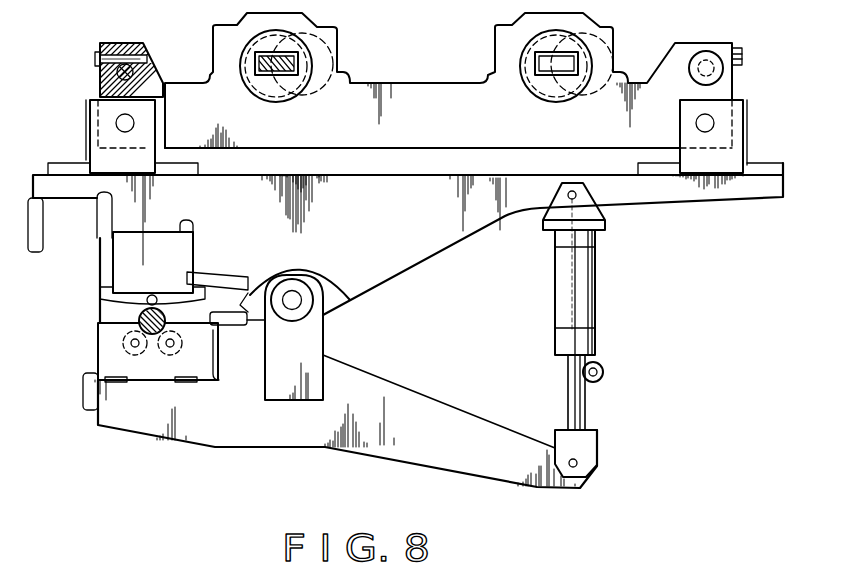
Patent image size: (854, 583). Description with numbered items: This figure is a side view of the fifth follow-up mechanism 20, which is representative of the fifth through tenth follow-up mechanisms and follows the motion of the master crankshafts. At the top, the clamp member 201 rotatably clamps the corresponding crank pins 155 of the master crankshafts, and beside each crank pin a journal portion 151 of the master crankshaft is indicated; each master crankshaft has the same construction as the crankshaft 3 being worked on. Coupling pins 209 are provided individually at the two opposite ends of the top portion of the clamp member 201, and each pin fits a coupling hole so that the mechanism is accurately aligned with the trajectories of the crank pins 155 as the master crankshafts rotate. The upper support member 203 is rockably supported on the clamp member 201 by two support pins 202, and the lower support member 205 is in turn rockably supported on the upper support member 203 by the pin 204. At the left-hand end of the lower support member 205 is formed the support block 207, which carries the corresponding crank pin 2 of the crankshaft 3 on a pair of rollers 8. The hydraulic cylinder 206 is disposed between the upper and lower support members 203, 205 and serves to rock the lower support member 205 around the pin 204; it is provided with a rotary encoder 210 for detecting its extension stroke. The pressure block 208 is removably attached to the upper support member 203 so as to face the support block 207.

The crank pin 2 is at (140, 313).
The crankshaft 3 is at (203, 324).
The rollers 8 is at (135, 355).
The fifth follow-up mechanism 20 is at (113, 39).
The journal portion 151 is at (320, 62).
The crank pin 155 is at (258, 64).
The clamp member 201 is at (412, 97).
The support pins 202 is at (118, 123).
The upper support member 203 is at (437, 250).
The pin 204 is at (296, 298).
The lower support member 205 is at (465, 420).
The hydraulic cylinder 206 is at (582, 332).
The support block 207 is at (107, 352).
The pressure block 208 is at (115, 272).
The coupling pins 209 is at (118, 72).
The rotary encoder 210 is at (603, 376).